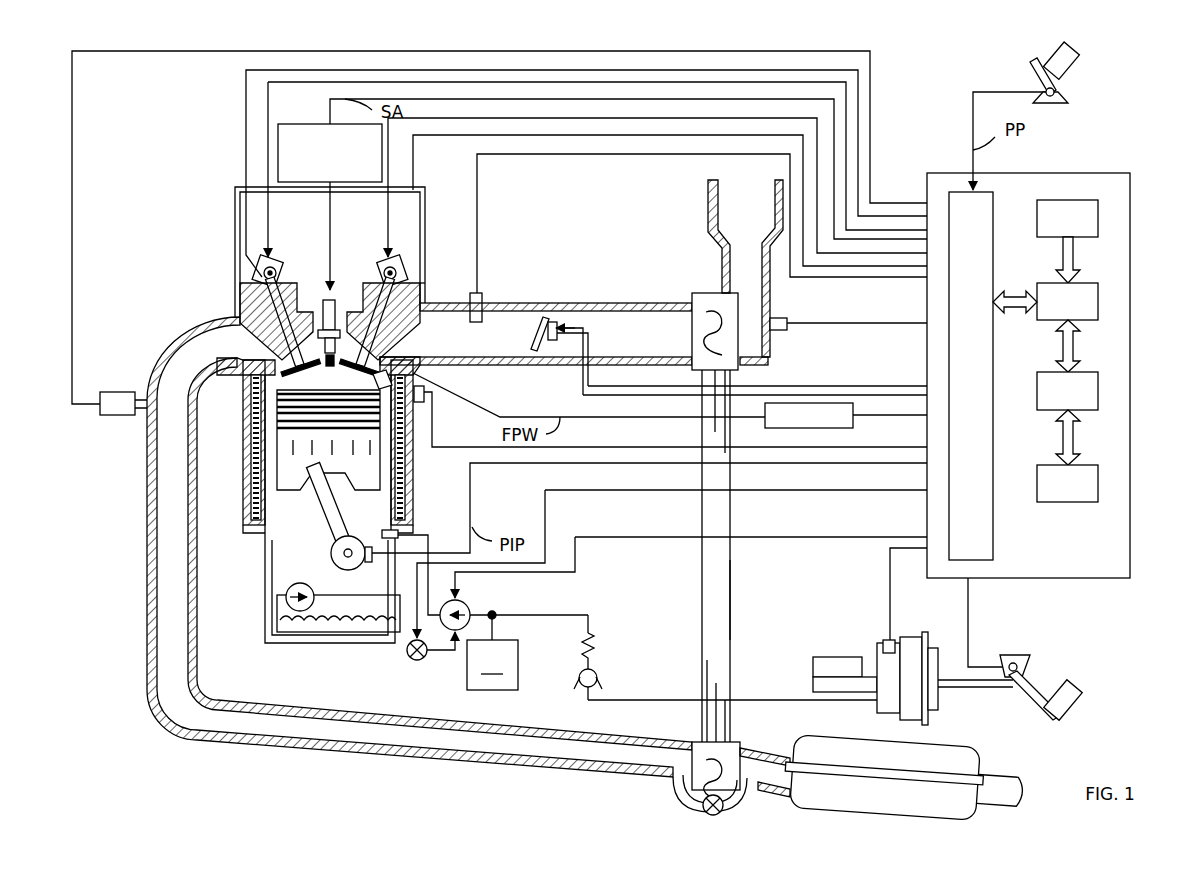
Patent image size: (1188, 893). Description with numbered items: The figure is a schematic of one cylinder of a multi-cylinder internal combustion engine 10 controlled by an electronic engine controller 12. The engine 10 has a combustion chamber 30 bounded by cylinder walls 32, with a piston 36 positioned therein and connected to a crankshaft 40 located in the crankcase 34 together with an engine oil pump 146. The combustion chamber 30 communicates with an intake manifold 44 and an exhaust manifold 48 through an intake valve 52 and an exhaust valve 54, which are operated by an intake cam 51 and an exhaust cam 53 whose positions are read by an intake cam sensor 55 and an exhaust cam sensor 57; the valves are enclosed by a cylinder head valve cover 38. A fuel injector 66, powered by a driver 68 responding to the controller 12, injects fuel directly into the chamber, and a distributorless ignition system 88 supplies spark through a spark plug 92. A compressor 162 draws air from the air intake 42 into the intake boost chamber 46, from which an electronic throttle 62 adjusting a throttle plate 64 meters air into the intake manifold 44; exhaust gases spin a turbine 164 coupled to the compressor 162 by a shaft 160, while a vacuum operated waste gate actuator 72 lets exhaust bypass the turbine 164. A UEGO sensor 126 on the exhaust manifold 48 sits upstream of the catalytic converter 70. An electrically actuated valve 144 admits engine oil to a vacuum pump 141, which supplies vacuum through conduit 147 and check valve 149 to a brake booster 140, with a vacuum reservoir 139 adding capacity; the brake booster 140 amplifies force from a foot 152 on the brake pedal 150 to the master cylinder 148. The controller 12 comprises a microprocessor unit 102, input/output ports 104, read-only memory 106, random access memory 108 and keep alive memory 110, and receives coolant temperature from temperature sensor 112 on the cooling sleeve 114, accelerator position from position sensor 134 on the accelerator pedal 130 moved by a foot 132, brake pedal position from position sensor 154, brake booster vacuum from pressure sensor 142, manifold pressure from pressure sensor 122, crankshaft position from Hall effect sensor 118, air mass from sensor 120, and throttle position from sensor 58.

The internal combustion engine 10 is at (178, 245).
The electronic engine controller 12 is at (1128, 172).
The combustion chamber 30 is at (325, 377).
The cylinder walls 32 is at (268, 494).
The crankcase 34 is at (357, 517).
The piston 36 is at (314, 466).
The cylinder head valve cover 38 is at (425, 185).
The crankshaft 40 is at (330, 555).
The air intake 42 is at (737, 221).
The intake manifold 44 is at (451, 346).
The intake boost chamber 46 is at (617, 346).
The exhaust manifold 48 is at (201, 351).
The intake cam 51 is at (383, 262).
The intake valve 52 is at (378, 348).
The exhaust cam 53 is at (276, 262).
The exhaust valve 54 is at (232, 308).
The intake cam sensor 55 is at (421, 285).
The exhaust cam sensor 57 is at (258, 275).
The throttle position sensor 58 is at (578, 302).
The electronic throttle 62 is at (530, 340).
The throttle plate 64 is at (552, 302).
The fuel injector 66 is at (569, 397).
The driver 68 is at (854, 426).
The catalytic converter 70 is at (790, 800).
The waste gate actuator 72 is at (700, 808).
The distributorless ignition system 88 is at (286, 124).
The spark plug 92 is at (334, 298).
The microprocessor unit 102 is at (1100, 297).
The input/output ports 104 is at (997, 198).
The read-only memory 106 is at (1100, 215).
The random access memory 108 is at (1100, 390).
The keep alive memory 110 is at (1100, 480).
The temperature sensor 112 is at (432, 432).
The cooling sleeve 114 is at (410, 480).
The Hall effect sensor 118 is at (364, 560).
The air mass sensor 120 is at (788, 320).
The pressure sensor 122 is at (484, 292).
The UEGO sensor 126 is at (100, 412).
The accelerator pedal 130 is at (1032, 70).
The foot 132 is at (1080, 62).
The position sensor 134 is at (1068, 98).
The vacuum reservoir 139 is at (527, 650).
The brake booster 140 is at (918, 637).
The vacuum pump 141 is at (472, 605).
The pressure sensor 142 is at (884, 640).
The valve 144 is at (407, 656).
The engine oil pump 146 is at (284, 588).
The conduit 147 is at (580, 614).
The master cylinder 148 is at (842, 656).
The check valve 149 is at (578, 668).
The brake pedal 150 is at (1045, 712).
The foot 152 is at (1066, 680).
The position sensor 154 is at (1002, 662).
The shaft 160 is at (734, 600).
The compressor 162 is at (702, 293).
The turbine 164 is at (742, 745).